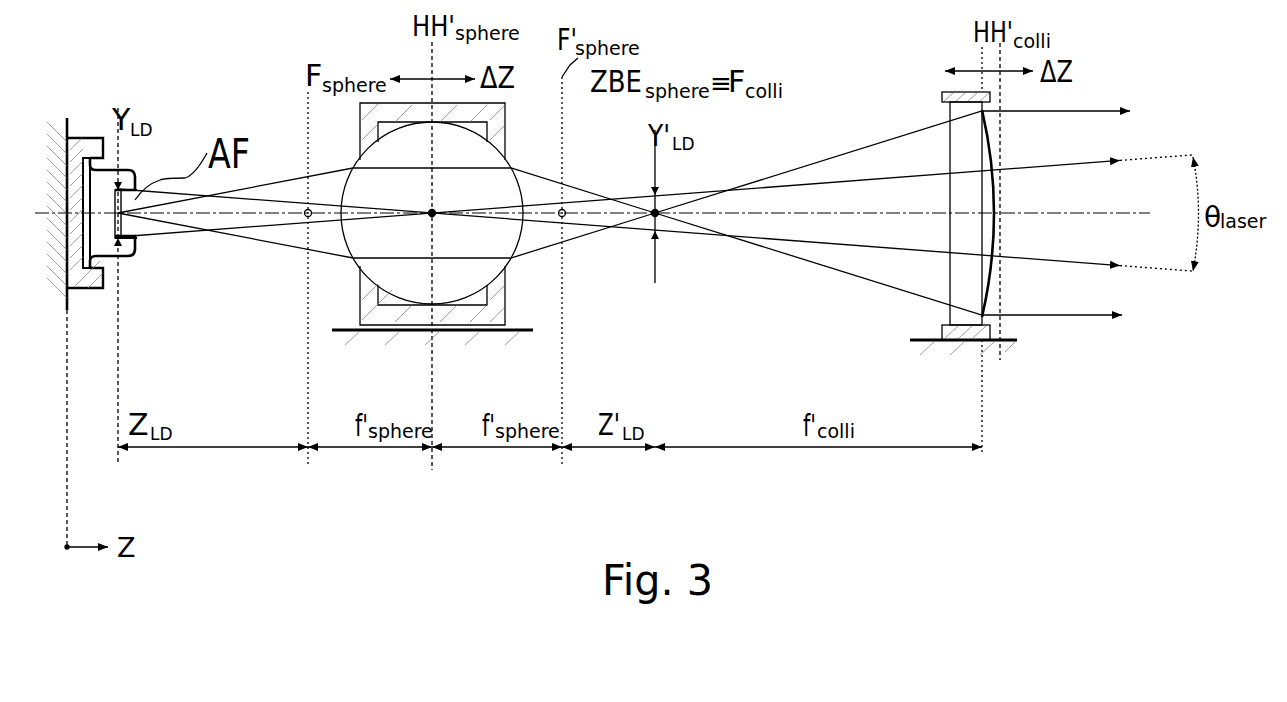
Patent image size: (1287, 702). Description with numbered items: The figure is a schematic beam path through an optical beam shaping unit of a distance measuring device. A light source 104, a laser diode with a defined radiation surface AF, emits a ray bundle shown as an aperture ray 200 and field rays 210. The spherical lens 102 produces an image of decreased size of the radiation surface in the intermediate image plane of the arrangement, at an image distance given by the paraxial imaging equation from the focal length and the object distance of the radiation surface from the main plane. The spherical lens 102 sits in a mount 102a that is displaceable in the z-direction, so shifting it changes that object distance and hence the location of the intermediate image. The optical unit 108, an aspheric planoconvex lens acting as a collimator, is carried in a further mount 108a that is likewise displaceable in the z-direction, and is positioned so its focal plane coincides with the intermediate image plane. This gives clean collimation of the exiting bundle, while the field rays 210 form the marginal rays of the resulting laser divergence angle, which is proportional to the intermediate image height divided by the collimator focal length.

The light source 104 is at (147, 240).
The spherical lens 102 is at (405, 306).
The mount 102a is at (490, 292).
The optical unit 108 is at (997, 250).
The further mount 108a is at (982, 348).
The aperture ray 200 is at (1095, 317).
The field ray 210 is at (1152, 152).